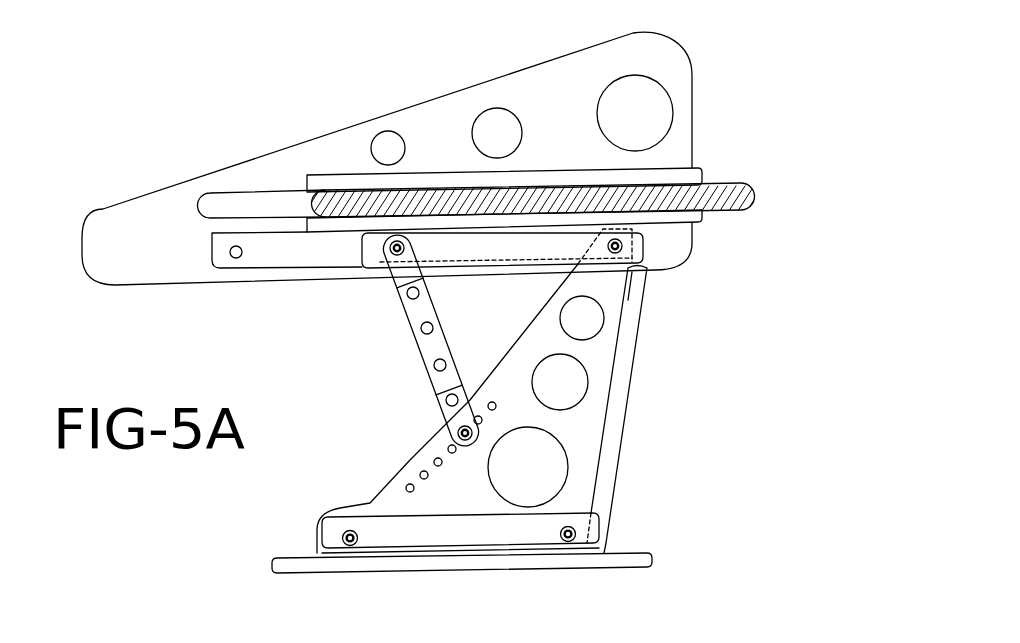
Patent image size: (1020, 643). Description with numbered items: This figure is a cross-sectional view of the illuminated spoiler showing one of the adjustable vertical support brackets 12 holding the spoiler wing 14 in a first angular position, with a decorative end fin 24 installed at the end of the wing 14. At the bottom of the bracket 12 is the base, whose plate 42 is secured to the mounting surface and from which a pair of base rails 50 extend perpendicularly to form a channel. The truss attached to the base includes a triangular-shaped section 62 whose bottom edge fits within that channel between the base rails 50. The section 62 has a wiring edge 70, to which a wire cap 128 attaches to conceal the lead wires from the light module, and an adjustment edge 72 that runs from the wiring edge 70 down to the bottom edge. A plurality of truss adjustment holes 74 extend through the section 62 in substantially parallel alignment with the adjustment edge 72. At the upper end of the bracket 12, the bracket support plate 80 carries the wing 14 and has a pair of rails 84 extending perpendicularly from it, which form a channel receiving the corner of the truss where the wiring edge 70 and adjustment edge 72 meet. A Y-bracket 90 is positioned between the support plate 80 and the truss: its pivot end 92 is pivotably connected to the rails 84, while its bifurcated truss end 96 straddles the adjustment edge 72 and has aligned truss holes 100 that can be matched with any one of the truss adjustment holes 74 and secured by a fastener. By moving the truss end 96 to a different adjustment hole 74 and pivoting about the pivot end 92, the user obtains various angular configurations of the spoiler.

The adjustable vertical support bracket 12 is at (154, 111).
The decorative end fin 24 is at (696, 70).
The spoiler wing 14 is at (744, 182).
The bracket support plate 80 is at (317, 238).
The rails 84 is at (374, 260).
The Y-bracket 90 is at (399, 334).
The pivot end 92 is at (410, 272).
The truss end 96 is at (446, 417).
The truss holes 100 is at (456, 441).
The truss adjustment holes 74 is at (490, 401).
The adjustment edge 72 is at (408, 470).
The triangular-shaped section 62 is at (577, 433).
The wiring edge 70 is at (623, 333).
The wire cap 128 is at (623, 377).
The base rails 50 is at (328, 537).
The plate 42 is at (638, 553).